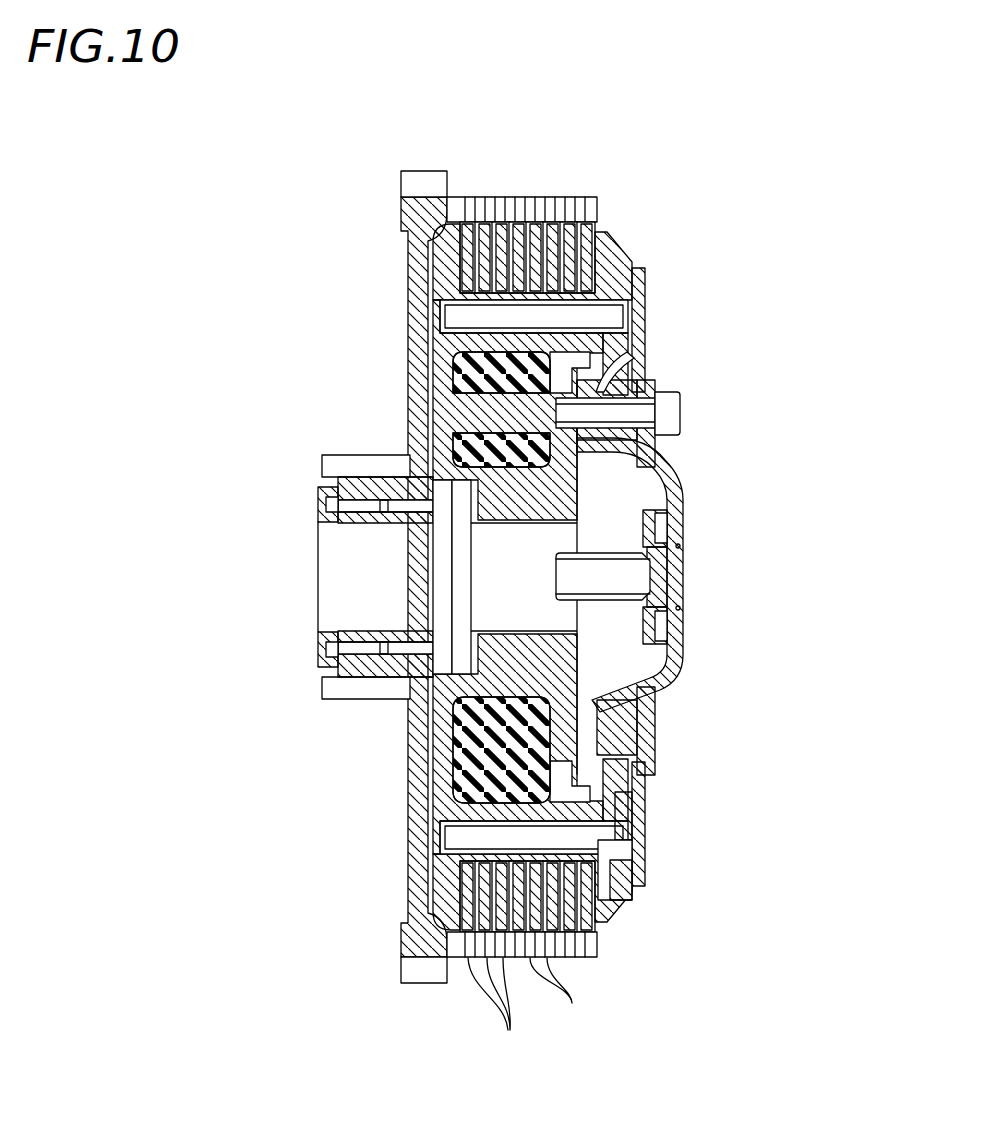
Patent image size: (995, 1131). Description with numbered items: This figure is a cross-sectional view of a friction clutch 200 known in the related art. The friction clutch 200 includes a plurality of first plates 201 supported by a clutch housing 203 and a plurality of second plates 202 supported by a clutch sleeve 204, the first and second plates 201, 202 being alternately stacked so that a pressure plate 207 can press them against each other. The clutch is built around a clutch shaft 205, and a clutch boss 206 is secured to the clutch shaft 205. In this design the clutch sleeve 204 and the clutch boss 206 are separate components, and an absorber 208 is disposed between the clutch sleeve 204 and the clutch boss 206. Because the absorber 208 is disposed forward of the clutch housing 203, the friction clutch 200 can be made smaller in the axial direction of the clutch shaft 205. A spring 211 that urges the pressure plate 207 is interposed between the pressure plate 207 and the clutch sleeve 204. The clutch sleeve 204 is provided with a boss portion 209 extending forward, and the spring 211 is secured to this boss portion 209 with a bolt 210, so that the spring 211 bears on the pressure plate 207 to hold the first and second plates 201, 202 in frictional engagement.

The friction clutch 200 is at (665, 210).
The first plates 201 is at (522, 1001).
The second plates 202 is at (565, 1003).
The clutch housing 203 is at (403, 893).
The clutch sleeve 204 is at (442, 762).
The clutch shaft 205 is at (342, 603).
The clutch boss 206 is at (577, 758).
The pressure plate 207 is at (672, 678).
The absorber 208 is at (478, 777).
The boss portion 209 is at (625, 355).
The bolt 210 is at (681, 413).
The spring 211 is at (647, 312).